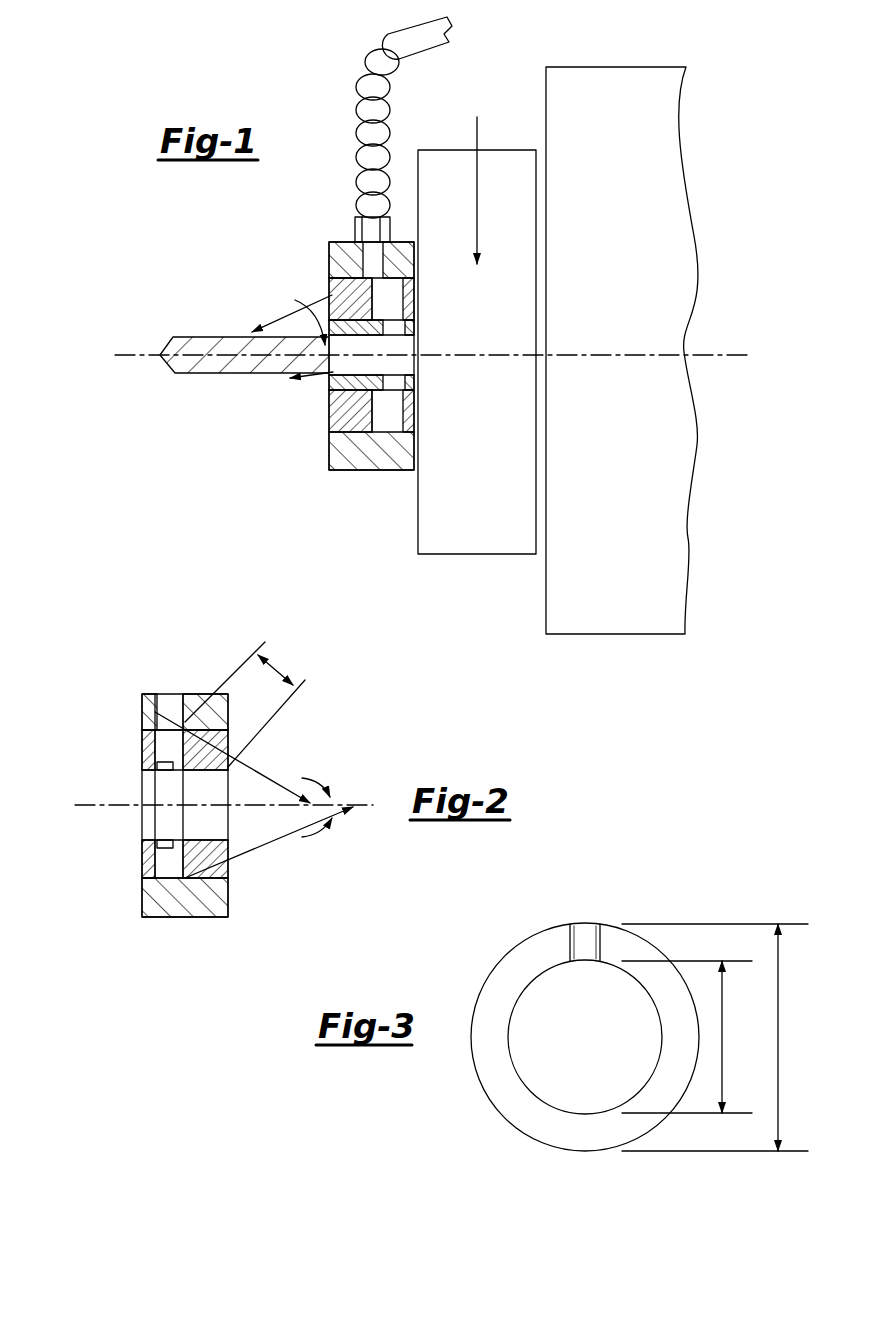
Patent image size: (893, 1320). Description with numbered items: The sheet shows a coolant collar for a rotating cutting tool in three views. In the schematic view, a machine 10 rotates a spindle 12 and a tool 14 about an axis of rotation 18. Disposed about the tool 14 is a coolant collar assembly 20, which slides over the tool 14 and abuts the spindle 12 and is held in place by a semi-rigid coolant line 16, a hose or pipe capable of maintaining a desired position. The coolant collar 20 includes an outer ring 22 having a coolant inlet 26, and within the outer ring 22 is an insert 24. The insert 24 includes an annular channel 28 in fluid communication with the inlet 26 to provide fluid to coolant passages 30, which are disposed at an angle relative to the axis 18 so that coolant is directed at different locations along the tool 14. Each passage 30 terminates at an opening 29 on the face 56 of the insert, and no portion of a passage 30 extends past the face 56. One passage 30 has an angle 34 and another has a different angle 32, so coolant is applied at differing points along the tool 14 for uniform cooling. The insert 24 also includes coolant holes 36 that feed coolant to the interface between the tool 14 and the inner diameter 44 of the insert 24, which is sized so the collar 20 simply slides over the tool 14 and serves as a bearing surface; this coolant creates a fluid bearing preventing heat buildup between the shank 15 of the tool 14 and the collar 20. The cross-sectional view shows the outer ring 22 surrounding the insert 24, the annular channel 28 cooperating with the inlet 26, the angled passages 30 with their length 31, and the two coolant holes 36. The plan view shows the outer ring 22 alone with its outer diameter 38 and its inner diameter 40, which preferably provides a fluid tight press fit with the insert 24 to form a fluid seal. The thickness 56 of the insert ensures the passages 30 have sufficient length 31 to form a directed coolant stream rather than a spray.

In FIG. 1, the machine 10 is at (626, 270).
In FIG. 1, the spindle 12 is at (490, 516).
In FIG. 1, the tool 14 is at (210, 367).
In FIG. 1, the shank 15 is at (407, 368).
In FIG. 1, the semi-rigid coolant line 16 is at (375, 62).
In FIG. 1, the axis of rotation 18 is at (135, 350).
In FIG. 2, the axis of rotation 18 is at (87, 807).
In FIG. 1, the coolant collar assembly 20 is at (317, 492).
In FIG. 2, the coolant collar assembly 20 is at (198, 660).
In FIG. 1, the outer ring 22 is at (390, 472).
In FIG. 3, the outer ring 22 is at (482, 1140).
In FIG. 1, the insert 24 is at (321, 435).
In FIG. 2, the insert 24 is at (230, 737).
In FIG. 1, the coolant inlet 26 is at (345, 245).
In FIG. 2, the coolant inlet 26 is at (168, 690).
In FIG. 3, the coolant inlet 26 is at (586, 920).
In FIG. 1, the annular channel 28 is at (402, 424).
In FIG. 2, the annular channel 28 is at (160, 867).
In FIG. 1, the opening 29 is at (318, 302).
In FIG. 2, the opening 29 is at (242, 758).
In FIG. 1, the coolant passages 30 is at (325, 417).
In FIG. 2, the coolant passages 30 is at (155, 712).
In FIG. 2, the length 31 is at (278, 668).
In FIG. 1, the angle 32 is at (278, 315).
In FIG. 2, the angle 32 is at (333, 797).
In FIG. 1, the angle 34 is at (307, 395).
In FIG. 2, the angle 34 is at (288, 785).
In FIG. 1, the coolant hole 36 is at (392, 330).
In FIG. 2, the coolant hole 36 is at (168, 836).
In FIG. 3, the outer diameter 38 is at (778, 1037).
In FIG. 3, the inner diameter 40 is at (722, 1037).
In FIG. 1, the inner diameter 44 is at (405, 345).
In FIG. 2, the inner diameter 44 is at (203, 777).
In FIG. 1, the face 56 is at (360, 262).
In FIG. 2, the face 56 is at (232, 873).